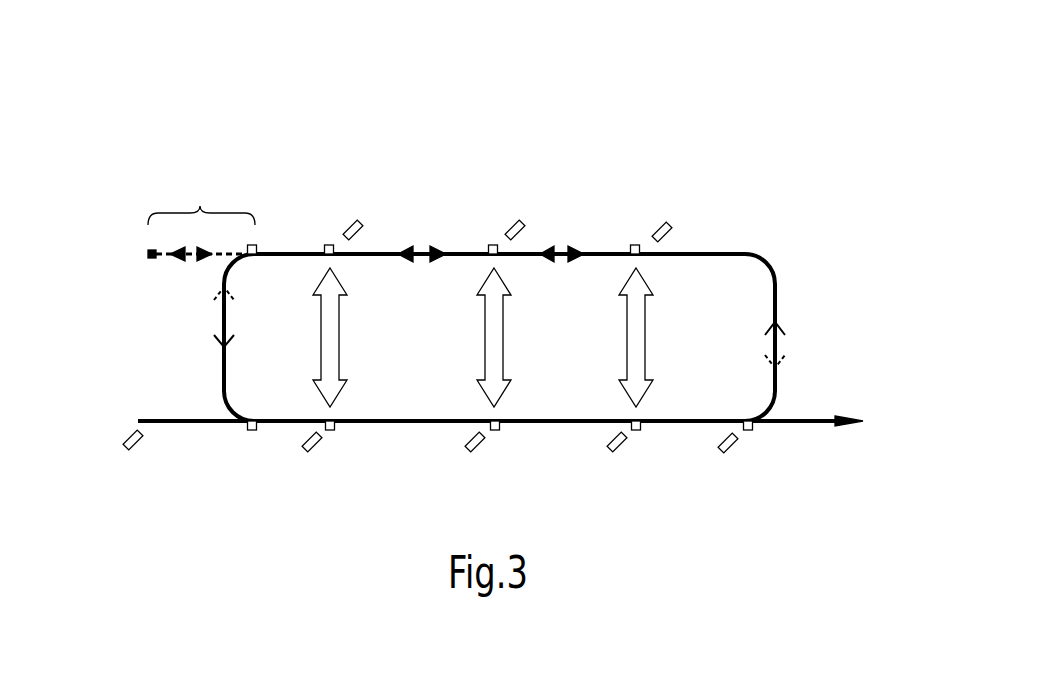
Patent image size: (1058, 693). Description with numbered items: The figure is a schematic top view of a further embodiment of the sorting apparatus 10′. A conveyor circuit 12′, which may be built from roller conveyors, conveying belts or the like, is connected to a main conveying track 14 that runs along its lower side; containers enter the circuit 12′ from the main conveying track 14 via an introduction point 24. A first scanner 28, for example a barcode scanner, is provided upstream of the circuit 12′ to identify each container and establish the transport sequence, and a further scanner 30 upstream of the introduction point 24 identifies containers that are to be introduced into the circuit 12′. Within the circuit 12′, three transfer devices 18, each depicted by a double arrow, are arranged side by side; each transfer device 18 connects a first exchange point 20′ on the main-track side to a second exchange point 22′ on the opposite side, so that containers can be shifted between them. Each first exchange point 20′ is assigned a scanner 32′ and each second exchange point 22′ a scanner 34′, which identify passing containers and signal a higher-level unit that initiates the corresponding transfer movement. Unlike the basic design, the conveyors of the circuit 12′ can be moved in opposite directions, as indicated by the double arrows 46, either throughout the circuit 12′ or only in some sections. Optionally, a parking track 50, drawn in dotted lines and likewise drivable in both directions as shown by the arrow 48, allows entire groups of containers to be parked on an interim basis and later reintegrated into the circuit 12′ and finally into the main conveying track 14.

The sorting apparatus 10′ is at (752, 225).
The conveyor circuit 12′ is at (778, 288).
The main conveying track 14 is at (172, 418).
The transfer device 18 is at (339, 337).
The first exchange point 20′ is at (331, 431).
The second exchange point 22′ is at (329, 246).
The introduction point 24 is at (750, 433).
The first scanner 28 is at (136, 452).
The scanner 30 is at (725, 453).
The scanner 32′ is at (305, 452).
The scanner 34′ is at (353, 222).
The double arrow 46 is at (423, 252).
The arrow 48 is at (190, 262).
The parking track 50 is at (201, 202).